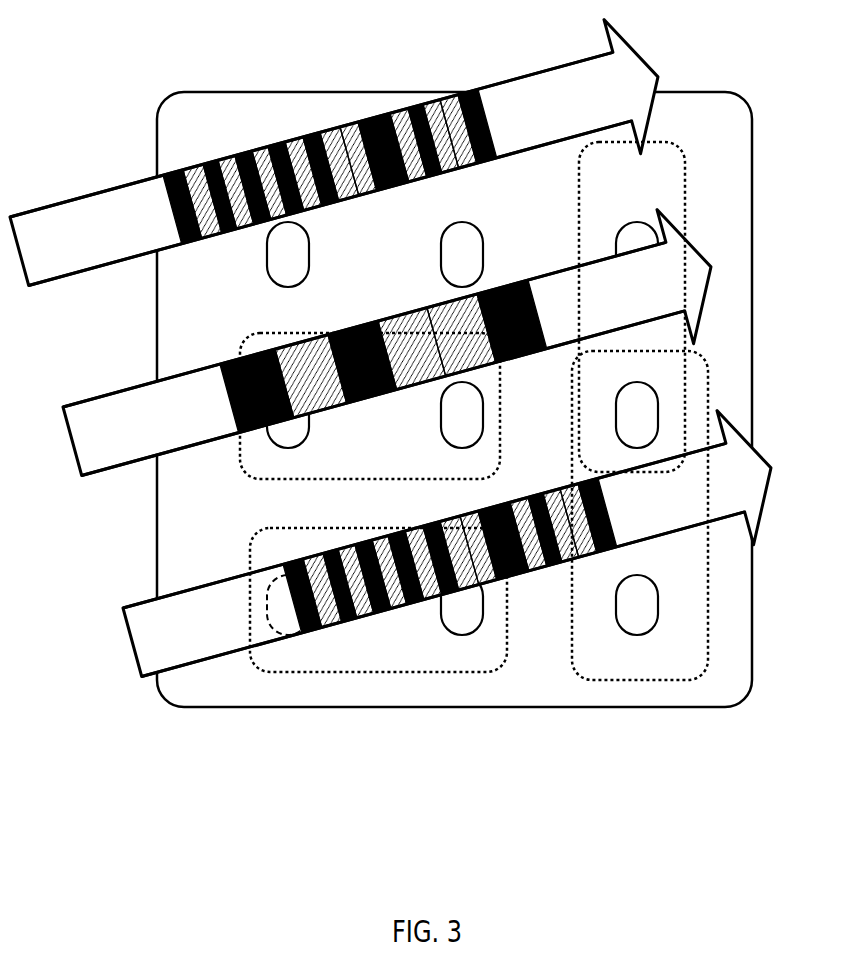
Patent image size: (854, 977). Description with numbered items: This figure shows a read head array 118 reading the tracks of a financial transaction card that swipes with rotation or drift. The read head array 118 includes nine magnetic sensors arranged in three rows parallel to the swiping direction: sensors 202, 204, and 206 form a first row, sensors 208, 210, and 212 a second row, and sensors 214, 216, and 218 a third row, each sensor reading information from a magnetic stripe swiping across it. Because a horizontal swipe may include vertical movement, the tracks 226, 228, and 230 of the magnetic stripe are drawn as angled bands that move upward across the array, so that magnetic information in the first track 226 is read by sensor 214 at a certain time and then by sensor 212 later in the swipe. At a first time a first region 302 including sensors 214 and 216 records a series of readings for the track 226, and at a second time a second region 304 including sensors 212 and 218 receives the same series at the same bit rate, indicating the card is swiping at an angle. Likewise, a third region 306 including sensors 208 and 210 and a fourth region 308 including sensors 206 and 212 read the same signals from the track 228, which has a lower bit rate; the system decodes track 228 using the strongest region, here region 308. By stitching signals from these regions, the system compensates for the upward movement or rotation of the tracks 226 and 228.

The read head array 118 is at (300, 92).
The sensor 202 is at (267, 281).
The sensor 204 is at (441, 255).
The sensor 206 is at (616, 237).
The sensor 208 is at (287, 448).
The sensor 210 is at (441, 447).
The sensor 212 is at (616, 423).
The sensor 214 is at (270, 590).
The sensor 216 is at (462, 634).
The sensor 218 is at (616, 621).
The first track 226 is at (131, 640).
The track 228 is at (103, 397).
The track 230 is at (111, 190).
The first region 302 is at (322, 673).
The second region 304 is at (710, 645).
The third region 306 is at (247, 342).
The fourth region 308 is at (687, 190).